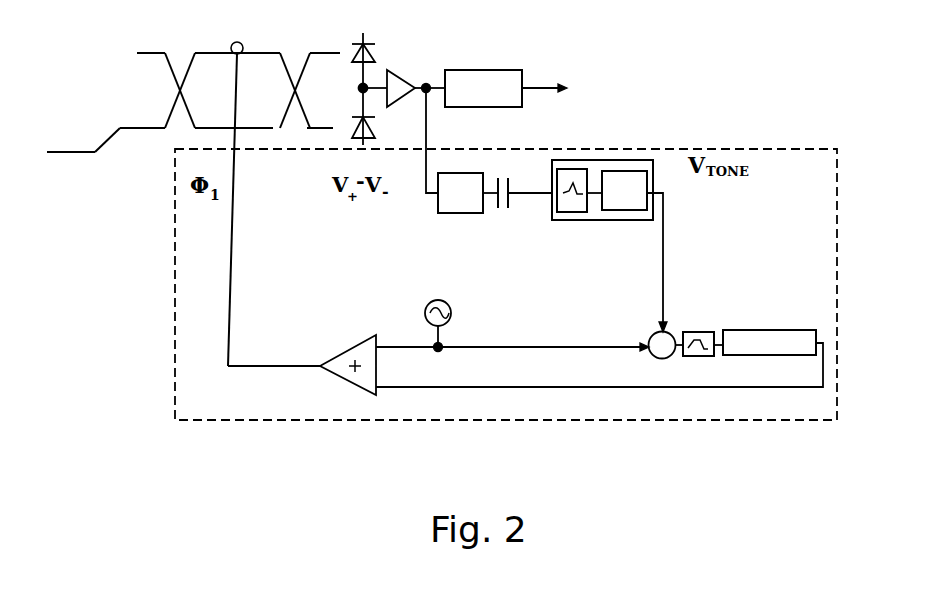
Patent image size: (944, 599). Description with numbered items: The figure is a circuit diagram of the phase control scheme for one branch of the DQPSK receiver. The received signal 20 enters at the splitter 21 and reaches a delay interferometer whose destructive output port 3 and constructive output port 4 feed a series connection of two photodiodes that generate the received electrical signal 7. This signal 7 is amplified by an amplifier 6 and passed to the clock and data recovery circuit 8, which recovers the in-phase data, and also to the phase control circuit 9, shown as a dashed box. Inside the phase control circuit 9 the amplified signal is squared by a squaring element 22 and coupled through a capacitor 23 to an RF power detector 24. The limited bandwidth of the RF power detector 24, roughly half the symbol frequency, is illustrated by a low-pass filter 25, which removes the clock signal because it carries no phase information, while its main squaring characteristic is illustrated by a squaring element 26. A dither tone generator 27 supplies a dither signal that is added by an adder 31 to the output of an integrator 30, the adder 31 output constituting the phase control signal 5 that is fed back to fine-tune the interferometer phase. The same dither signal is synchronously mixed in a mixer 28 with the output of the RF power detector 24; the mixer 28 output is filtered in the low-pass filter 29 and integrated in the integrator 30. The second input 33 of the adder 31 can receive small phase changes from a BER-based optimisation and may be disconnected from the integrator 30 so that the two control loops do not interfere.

The destructive output port 3 is at (316, 52).
The constructive output port 4 is at (312, 128).
The phase control signal 5 is at (232, 232).
The amplifier 6 is at (408, 76).
The received electrical signal 7 is at (381, 82).
The clock and data recovery circuit 8 is at (473, 68).
The phase control circuit 9 is at (620, 147).
The received signal 20 is at (88, 150).
The splitter 21 is at (95, 153).
The squaring element 22 is at (447, 214).
The capacitor 23 is at (507, 209).
The RF power detector 24 is at (555, 222).
The low-pass filter 25 is at (575, 213).
The squaring element 26 is at (625, 212).
The dither tone generator 27 is at (452, 304).
The mixer 28 is at (650, 335).
The low-pass filter 29 is at (696, 330).
The integrator 30 is at (752, 328).
The adder 31 is at (345, 379).
The second input 33 is at (545, 386).